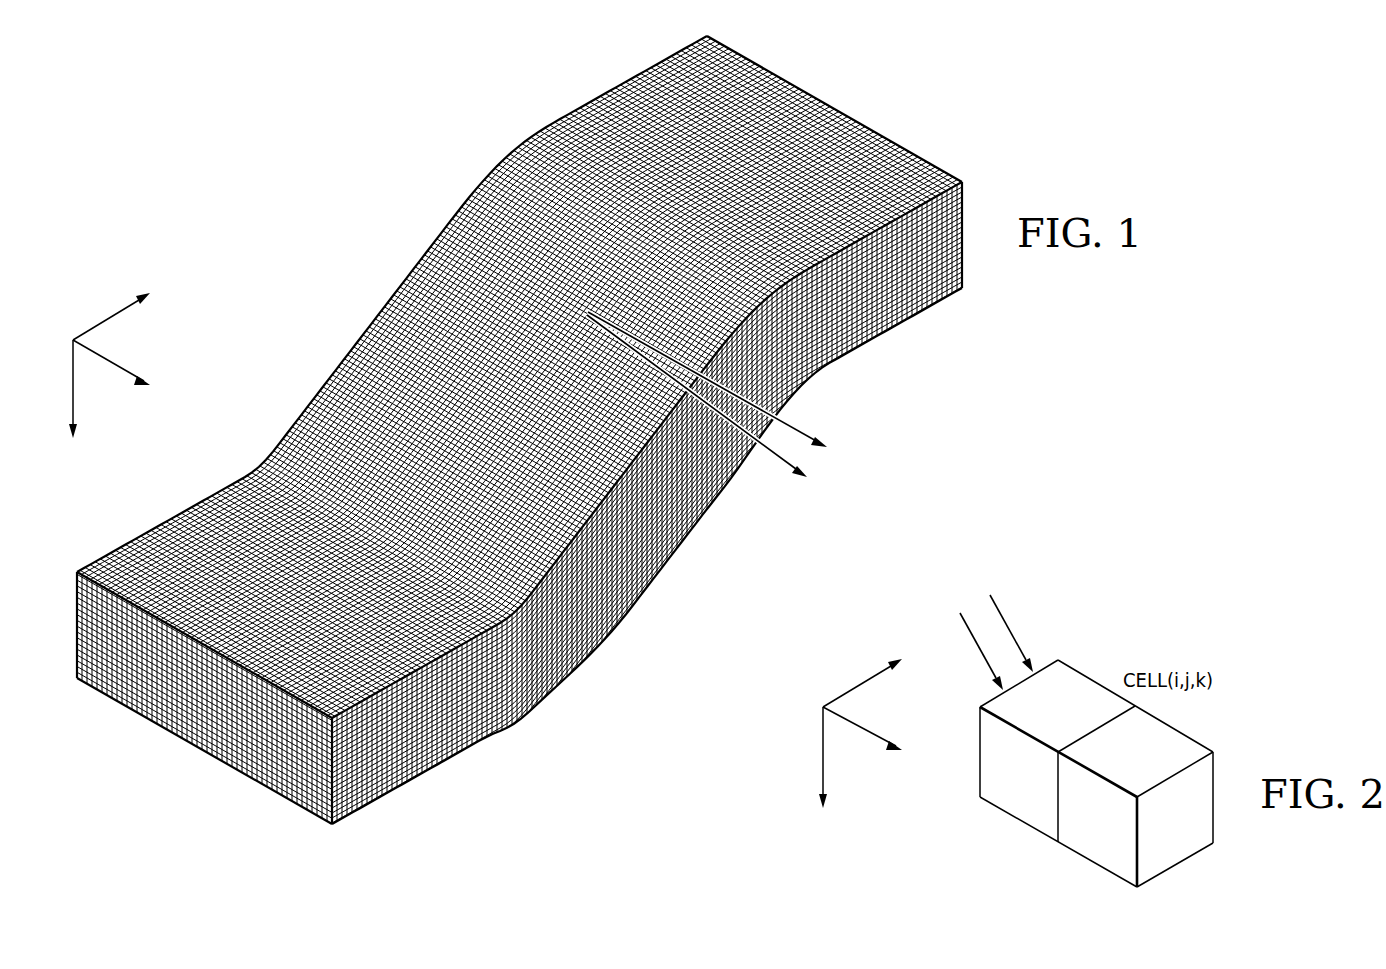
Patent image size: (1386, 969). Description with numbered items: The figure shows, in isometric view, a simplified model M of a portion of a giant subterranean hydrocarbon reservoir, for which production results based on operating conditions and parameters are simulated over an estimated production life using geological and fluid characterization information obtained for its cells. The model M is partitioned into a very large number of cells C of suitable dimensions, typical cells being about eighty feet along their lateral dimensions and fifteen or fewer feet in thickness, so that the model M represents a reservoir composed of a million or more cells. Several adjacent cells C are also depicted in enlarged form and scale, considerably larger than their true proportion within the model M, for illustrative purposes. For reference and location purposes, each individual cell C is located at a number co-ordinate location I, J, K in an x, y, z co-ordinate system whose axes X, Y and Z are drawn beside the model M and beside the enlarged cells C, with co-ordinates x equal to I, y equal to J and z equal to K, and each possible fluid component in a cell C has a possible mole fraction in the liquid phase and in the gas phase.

In FIG. 1, the model M is at (418, 243).
In FIG. 2, the cell C is at (1027, 790).
In FIG. 1, the x co-ordinate axis X is at (122, 308).
In FIG. 2, the x co-ordinate axis X is at (872, 674).
In FIG. 1, the y co-ordinate axis Y is at (123, 371).
In FIG. 2, the y co-ordinate axis Y is at (872, 739).
In FIG. 1, the z co-ordinate axis Z is at (72, 404).
In FIG. 2, the z co-ordinate axis Z is at (822, 772).